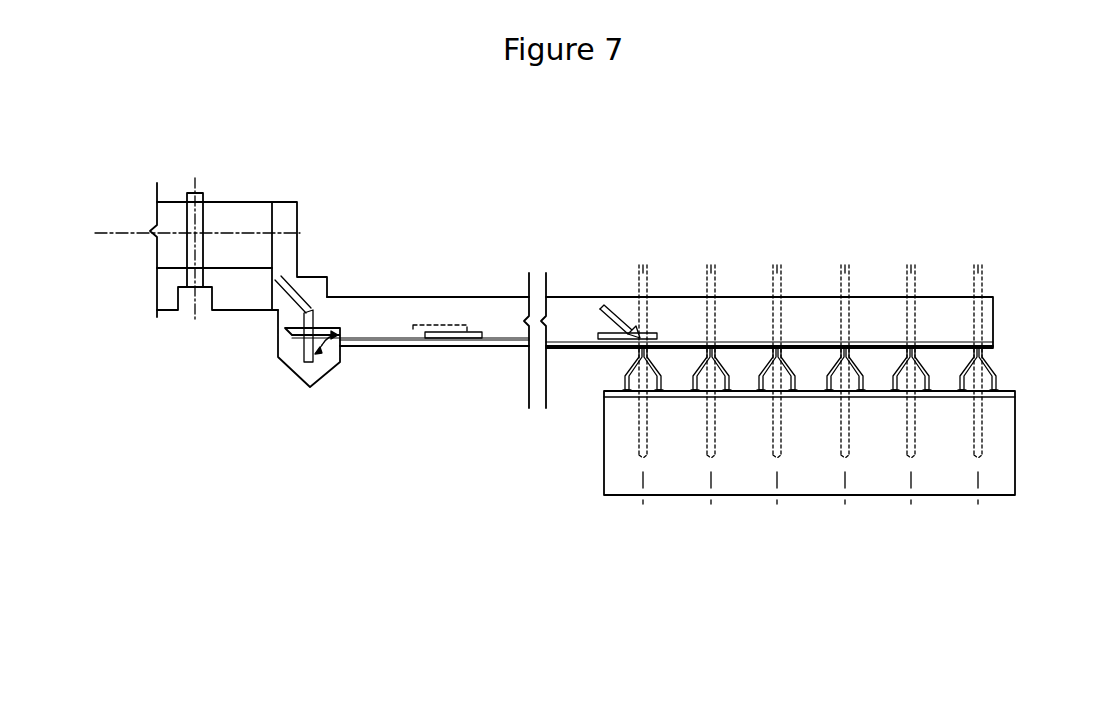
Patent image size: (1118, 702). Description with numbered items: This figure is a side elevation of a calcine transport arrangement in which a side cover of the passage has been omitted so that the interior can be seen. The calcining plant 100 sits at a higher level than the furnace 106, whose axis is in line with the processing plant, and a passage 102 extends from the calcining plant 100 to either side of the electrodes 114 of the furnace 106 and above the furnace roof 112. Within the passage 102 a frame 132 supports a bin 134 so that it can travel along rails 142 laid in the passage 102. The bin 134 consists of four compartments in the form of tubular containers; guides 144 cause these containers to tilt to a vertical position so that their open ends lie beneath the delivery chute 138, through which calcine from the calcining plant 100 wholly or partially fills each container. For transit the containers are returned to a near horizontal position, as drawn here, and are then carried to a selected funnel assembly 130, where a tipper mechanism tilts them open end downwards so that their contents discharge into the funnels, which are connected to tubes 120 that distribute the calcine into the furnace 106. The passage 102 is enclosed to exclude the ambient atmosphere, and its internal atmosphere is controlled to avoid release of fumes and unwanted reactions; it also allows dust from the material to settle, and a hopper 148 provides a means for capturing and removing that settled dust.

The calcining plant 100 is at (235, 200).
The passage 102 is at (457, 297).
The furnace 106 is at (747, 523).
The furnace roof 112 is at (1015, 388).
The electrode 114 is at (980, 282).
The tube 120 is at (657, 368).
The funnel assembly 130 is at (987, 357).
The frame 132 is at (320, 325).
The bin 134 is at (617, 300).
The delivery chute 138 is at (306, 308).
The rail 142 is at (404, 347).
The guide 144 is at (336, 360).
The hopper 148 is at (295, 375).